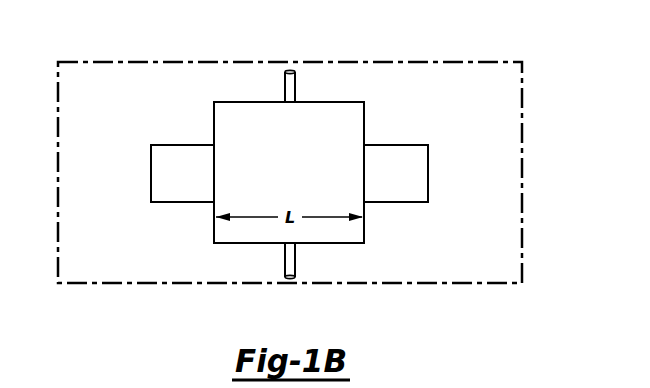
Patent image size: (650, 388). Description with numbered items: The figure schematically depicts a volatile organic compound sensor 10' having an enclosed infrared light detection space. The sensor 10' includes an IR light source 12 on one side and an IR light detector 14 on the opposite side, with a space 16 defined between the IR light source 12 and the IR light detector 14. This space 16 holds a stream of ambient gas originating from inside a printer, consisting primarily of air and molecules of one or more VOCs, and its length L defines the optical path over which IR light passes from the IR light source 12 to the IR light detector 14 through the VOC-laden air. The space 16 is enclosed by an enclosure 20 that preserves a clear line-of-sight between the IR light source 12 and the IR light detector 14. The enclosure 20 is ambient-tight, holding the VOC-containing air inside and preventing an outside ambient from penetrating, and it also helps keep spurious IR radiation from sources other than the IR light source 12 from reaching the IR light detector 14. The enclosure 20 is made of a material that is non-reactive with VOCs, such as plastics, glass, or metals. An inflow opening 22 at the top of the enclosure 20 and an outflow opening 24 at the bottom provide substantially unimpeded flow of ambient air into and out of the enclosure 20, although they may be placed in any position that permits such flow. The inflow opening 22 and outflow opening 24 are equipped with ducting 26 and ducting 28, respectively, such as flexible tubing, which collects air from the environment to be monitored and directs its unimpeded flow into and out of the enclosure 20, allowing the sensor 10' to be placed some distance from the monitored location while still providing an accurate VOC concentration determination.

The VOC sensor 10' is at (308, 142).
The IR light source 12 is at (172, 186).
The IR light detector 14 is at (386, 186).
The space 16 is at (326, 126).
The enclosure 20 is at (333, 244).
The inflow opening 22 is at (288, 103).
The outflow opening 24 is at (289, 243).
The ducting 26 is at (284, 88).
The ducting 28 is at (285, 261).